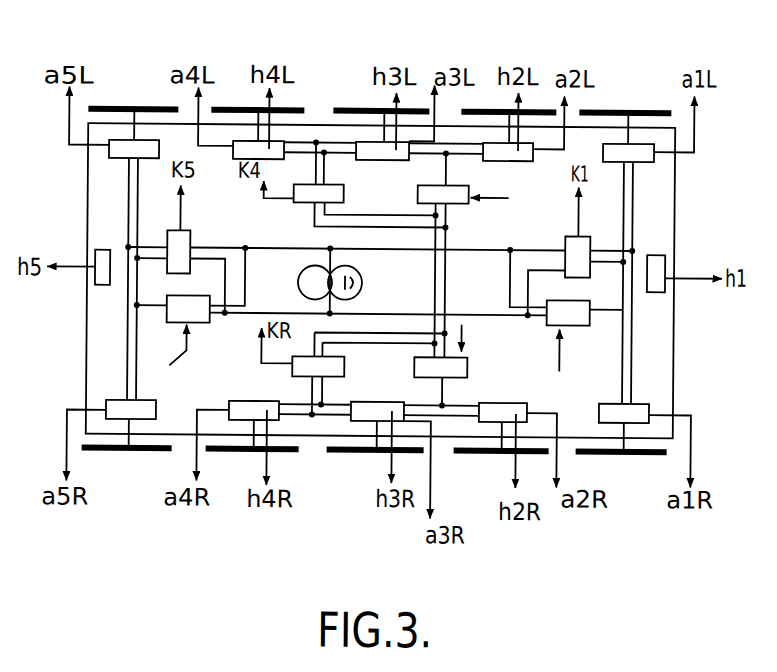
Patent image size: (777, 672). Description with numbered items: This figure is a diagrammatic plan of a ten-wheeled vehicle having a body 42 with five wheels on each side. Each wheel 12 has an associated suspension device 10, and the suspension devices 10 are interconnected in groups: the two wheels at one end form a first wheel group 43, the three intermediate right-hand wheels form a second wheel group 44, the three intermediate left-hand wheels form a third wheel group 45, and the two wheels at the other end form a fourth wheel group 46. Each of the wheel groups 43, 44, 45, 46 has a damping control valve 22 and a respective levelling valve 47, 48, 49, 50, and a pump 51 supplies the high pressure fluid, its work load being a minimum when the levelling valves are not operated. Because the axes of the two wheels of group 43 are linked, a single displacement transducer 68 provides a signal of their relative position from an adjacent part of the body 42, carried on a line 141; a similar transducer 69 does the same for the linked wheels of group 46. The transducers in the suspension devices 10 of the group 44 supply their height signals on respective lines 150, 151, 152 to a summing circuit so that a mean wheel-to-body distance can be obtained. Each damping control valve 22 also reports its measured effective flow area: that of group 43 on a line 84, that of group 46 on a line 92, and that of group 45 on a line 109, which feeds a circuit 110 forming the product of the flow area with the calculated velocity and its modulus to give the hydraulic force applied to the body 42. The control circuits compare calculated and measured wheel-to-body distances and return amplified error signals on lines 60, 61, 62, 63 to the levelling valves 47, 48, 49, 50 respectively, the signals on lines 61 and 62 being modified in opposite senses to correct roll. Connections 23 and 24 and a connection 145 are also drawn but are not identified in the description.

The suspension device 10 is at (616, 148).
The wheel 12 is at (640, 501).
The damping control valve 22 is at (360, 372).
The lower supply line 23 is at (505, 315).
The upper supply line 24 is at (475, 250).
The vehicle body 42 is at (102, 184).
The first wheel group 43 is at (642, 344).
The second wheel group 44 is at (392, 528).
The third wheel group 45 is at (323, 88).
The fourth wheel group 46 is at (108, 325).
The levelling valve 47 is at (573, 315).
The levelling valve 48 is at (448, 368).
The levelling valve 49 is at (445, 200).
The levelling valve 50 is at (173, 315).
The pump 51 is at (362, 283).
The lines 60 is at (560, 351).
The line 61 is at (465, 336).
The line 62 is at (498, 198).
The line 63 is at (169, 360).
The displacement transducer 68 is at (657, 270).
The displacement transducer 69 is at (100, 265).
The line 84 is at (577, 230).
The line 92 is at (180, 228).
The line 109 is at (262, 353).
The circuit 110 is at (266, 199).
The line 141 is at (687, 277).
The output line h5 145 is at (75, 270).
The line 150 is at (522, 457).
The line 151 is at (388, 460).
The line 152 is at (262, 456).